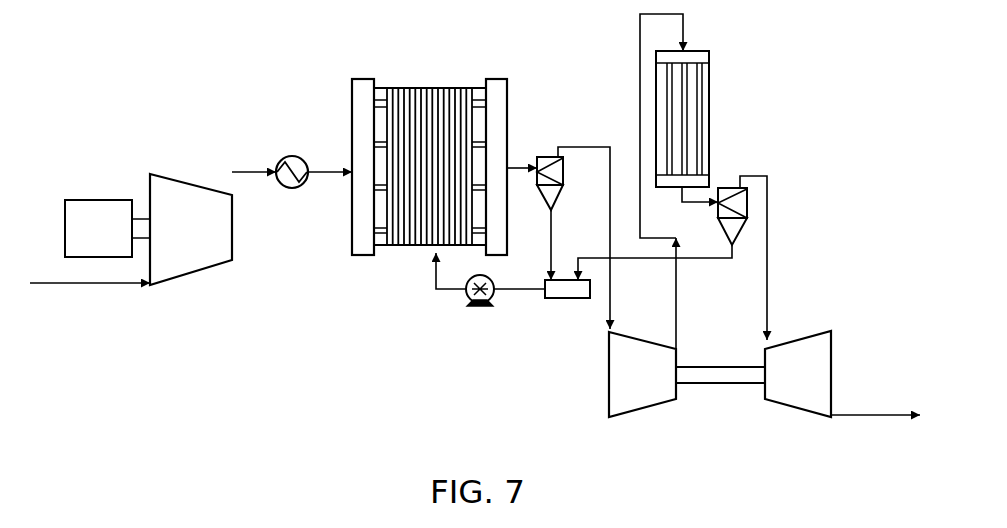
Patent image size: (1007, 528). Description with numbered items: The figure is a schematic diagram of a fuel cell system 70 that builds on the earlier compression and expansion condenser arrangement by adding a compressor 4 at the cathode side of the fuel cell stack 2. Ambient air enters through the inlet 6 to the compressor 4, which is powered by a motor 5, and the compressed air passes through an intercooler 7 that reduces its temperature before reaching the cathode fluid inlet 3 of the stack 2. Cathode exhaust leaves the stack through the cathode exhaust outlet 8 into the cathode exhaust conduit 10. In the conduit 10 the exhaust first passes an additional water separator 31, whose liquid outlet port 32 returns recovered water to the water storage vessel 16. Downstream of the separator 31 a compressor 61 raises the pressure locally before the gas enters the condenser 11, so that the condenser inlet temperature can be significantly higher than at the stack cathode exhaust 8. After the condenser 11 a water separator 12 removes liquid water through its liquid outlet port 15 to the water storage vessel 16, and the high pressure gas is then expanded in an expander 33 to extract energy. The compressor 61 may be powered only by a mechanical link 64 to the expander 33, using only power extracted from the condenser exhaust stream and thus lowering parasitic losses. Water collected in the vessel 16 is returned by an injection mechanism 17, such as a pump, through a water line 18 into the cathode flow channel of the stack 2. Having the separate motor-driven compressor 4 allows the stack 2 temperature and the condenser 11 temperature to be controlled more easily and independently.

The fuel cell system 70 is at (205, 58).
The fuel cell stack 2 is at (432, 88).
The cathode fluid inlet 3 is at (326, 178).
The compressor 4 is at (195, 276).
The motor 5 is at (97, 200).
The inlet 6 is at (95, 285).
The intercooler 7 is at (288, 157).
The cathode exhaust outlet 8 is at (515, 170).
The cathode exhaust conduit 10 is at (556, 150).
The condenser 11 is at (709, 55).
The water separator 12 is at (733, 188).
The liquid outlet port 15 is at (733, 246).
The water storage vessel 16 is at (568, 299).
The injection mechanism 17 is at (483, 307).
The water line 18 is at (433, 275).
The additional water separator 31 is at (563, 172).
The liquid outlet port 32 is at (553, 213).
The expander 33 is at (793, 413).
The compressor 61 is at (645, 413).
The mechanical link 64 is at (710, 384).